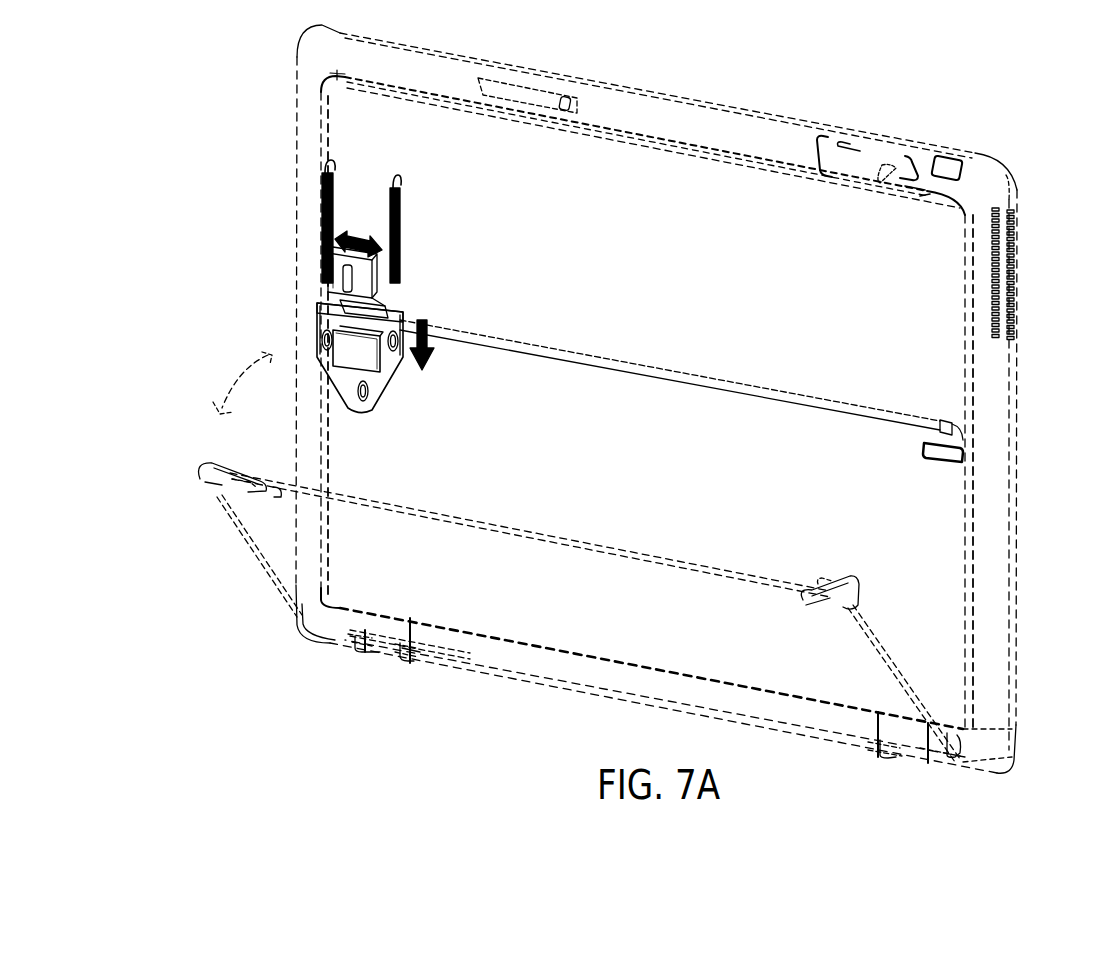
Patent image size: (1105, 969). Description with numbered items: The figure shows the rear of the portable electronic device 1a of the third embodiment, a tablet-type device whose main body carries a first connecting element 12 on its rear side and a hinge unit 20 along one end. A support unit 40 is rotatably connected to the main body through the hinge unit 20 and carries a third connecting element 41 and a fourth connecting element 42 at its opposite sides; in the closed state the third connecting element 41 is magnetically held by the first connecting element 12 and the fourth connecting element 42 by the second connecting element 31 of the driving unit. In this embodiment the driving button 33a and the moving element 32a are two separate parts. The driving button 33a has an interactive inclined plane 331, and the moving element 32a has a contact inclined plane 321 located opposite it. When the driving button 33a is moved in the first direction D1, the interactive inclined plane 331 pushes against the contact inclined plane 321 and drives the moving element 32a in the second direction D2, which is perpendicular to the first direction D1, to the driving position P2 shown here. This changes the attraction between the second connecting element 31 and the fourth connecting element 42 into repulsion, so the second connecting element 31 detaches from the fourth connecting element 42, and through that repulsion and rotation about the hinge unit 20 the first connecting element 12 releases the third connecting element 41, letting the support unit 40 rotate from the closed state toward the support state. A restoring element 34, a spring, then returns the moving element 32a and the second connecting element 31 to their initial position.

The portable electronic device 1a is at (217, 162).
The first connecting element 12 is at (950, 453).
The hinge unit 20 is at (380, 660).
The second connecting element 31 is at (326, 332).
The moving element 32a is at (386, 377).
The contact inclined plane 321 is at (333, 320).
The driving button 33a is at (342, 280).
The interactive inclined plane 331 is at (372, 311).
The restoring element 34 is at (401, 209).
The support unit 40 is at (242, 508).
The third connecting element 41 is at (860, 603).
The fourth connecting element 42 is at (246, 491).
The driving position P2 is at (382, 258).
The first direction D1 is at (360, 233).
The second direction D2 is at (440, 336).